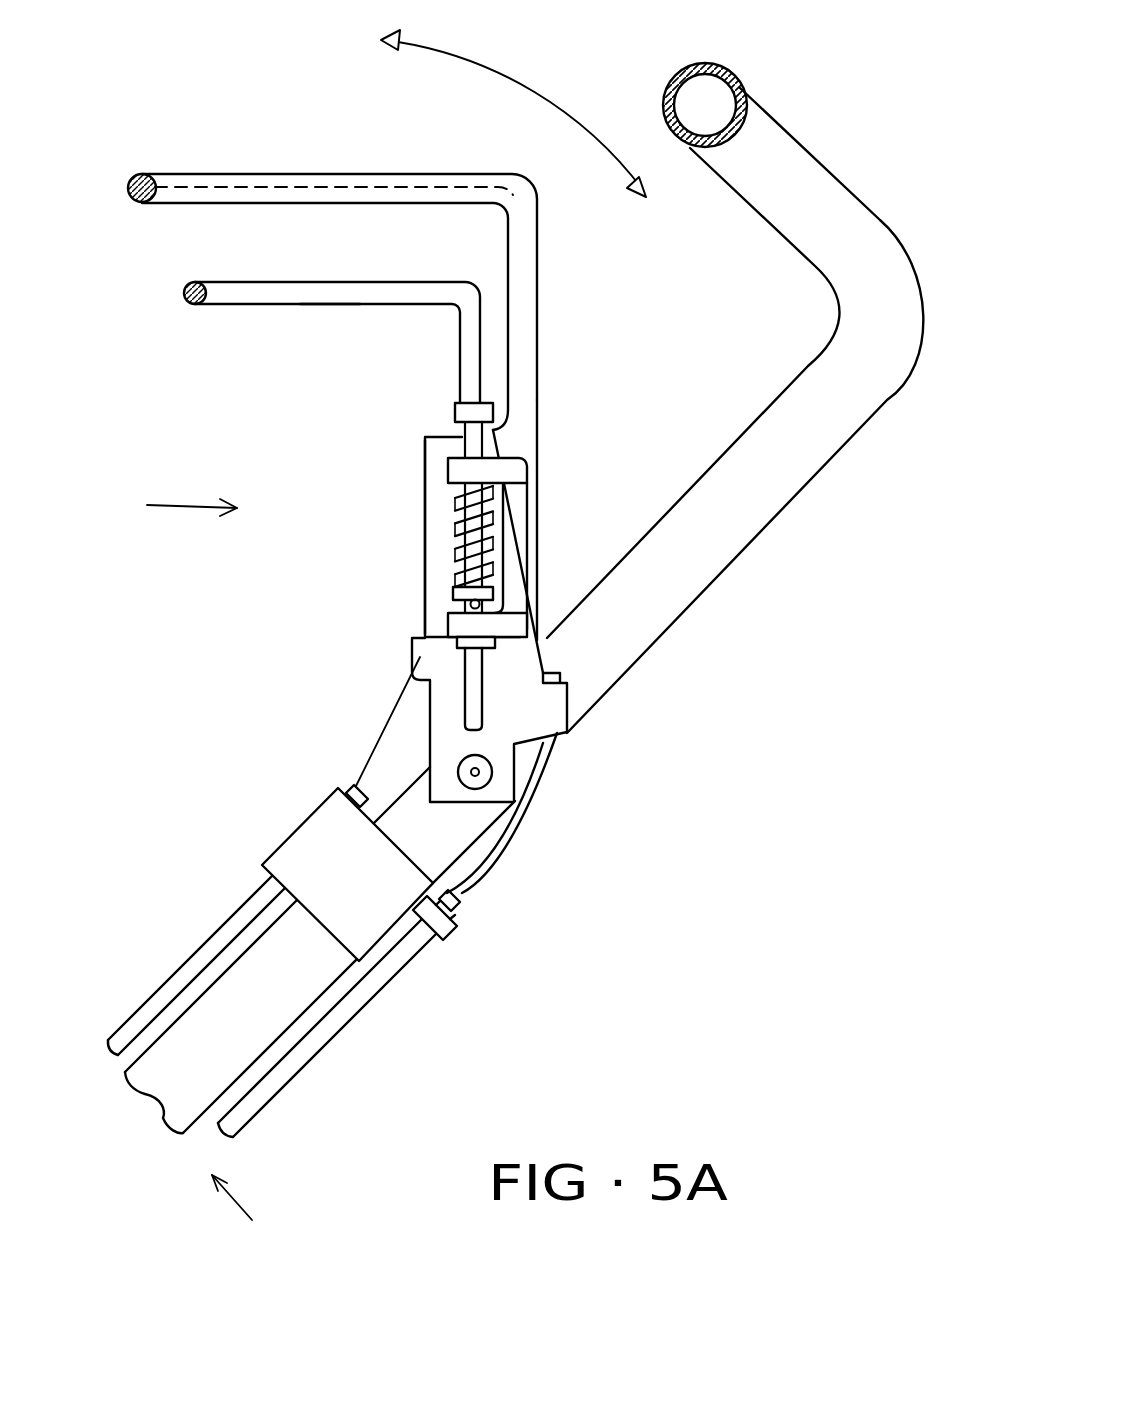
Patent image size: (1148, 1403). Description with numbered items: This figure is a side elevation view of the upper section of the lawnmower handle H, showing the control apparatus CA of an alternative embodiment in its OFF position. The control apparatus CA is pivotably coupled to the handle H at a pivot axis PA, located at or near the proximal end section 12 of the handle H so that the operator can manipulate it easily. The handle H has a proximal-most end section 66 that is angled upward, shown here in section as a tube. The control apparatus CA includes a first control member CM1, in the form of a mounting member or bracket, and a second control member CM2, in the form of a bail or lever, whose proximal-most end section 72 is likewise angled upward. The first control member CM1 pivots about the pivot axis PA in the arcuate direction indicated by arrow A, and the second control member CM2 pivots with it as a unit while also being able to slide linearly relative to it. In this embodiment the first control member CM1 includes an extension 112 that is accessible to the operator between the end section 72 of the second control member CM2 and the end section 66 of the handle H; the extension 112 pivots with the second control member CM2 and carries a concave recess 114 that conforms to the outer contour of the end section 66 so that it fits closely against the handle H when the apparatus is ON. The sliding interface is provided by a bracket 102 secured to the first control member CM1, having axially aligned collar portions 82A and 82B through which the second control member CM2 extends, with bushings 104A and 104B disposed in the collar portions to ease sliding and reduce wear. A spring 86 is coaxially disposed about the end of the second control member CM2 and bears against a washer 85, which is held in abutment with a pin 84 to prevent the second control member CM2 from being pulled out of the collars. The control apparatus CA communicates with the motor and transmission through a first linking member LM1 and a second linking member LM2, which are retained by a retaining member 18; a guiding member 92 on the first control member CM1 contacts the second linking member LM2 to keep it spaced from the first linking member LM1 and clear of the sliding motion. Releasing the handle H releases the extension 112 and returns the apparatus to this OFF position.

The proximal end section 12 is at (798, 600).
The retaining member 18 is at (310, 815).
The proximal-most end section 66 is at (832, 170).
The proximal-most end section 72 is at (232, 281).
The collar portion 82A is at (448, 468).
The collar portion 82B is at (450, 625).
The pin 84 is at (493, 610).
The washer 85 is at (493, 595).
The spring 86 is at (483, 523).
The guiding member 92 is at (568, 712).
The bracket 102 is at (527, 480).
The bushing 104A is at (495, 428).
The bushing 104B is at (457, 643).
The extension 112 is at (190, 175).
The concave recess 114 is at (256, 184).
The arrow A is at (535, 90).
The control apparatus CA is at (163, 503).
The first control member CM1 is at (423, 468).
The second control member CM2 is at (337, 305).
The handle H is at (246, 1219).
The first linking member LM1 is at (190, 952).
The second linking member LM2 is at (292, 1077).
The pivot axis PA is at (492, 773).